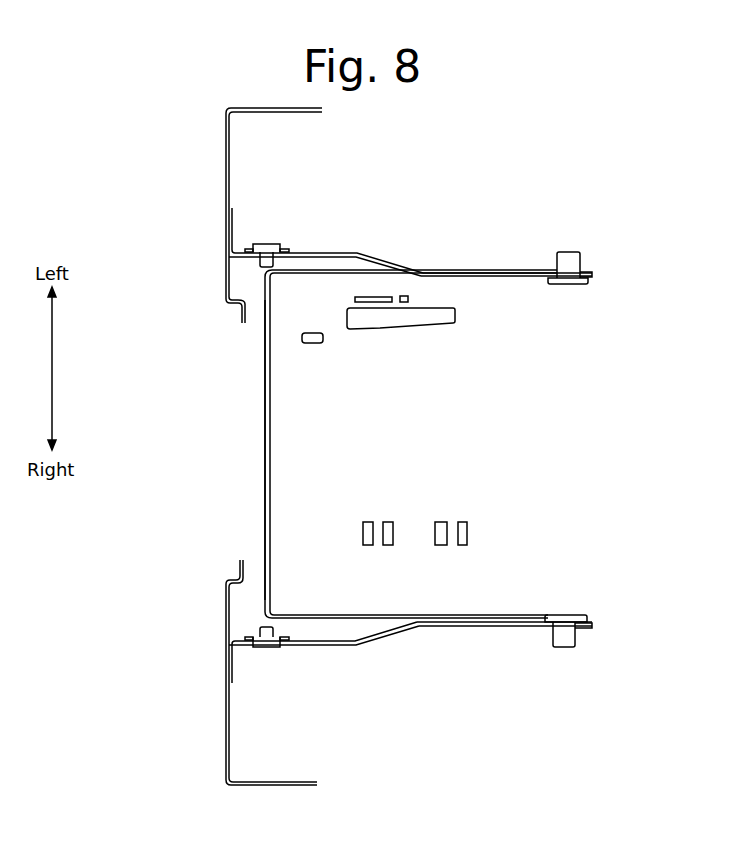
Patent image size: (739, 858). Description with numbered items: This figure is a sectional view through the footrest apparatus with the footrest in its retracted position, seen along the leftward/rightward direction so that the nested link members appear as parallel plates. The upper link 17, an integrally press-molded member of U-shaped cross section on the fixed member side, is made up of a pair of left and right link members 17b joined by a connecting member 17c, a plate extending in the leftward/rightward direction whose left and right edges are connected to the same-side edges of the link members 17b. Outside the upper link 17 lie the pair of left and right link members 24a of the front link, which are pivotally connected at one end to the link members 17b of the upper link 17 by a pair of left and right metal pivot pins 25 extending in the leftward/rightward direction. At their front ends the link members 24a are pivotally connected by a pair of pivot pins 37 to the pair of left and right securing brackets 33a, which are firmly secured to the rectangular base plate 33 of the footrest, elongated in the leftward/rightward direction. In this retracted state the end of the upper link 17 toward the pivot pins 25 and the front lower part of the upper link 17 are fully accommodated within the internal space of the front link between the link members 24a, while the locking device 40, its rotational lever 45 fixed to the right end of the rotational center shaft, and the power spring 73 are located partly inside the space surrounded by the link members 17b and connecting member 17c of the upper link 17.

The upper link 17 is at (265, 417).
The link members 17b is at (477, 276).
The connecting member 17c is at (265, 462).
The link members 24a is at (360, 249).
The pivot pins 25 is at (570, 284).
The base plate 33 is at (226, 173).
The securing brackets 33a is at (232, 217).
The pivot pins 37 is at (277, 243).
The locking device 40 is at (313, 351).
The rotational lever 45 is at (413, 332).
The power spring 73 is at (478, 536).